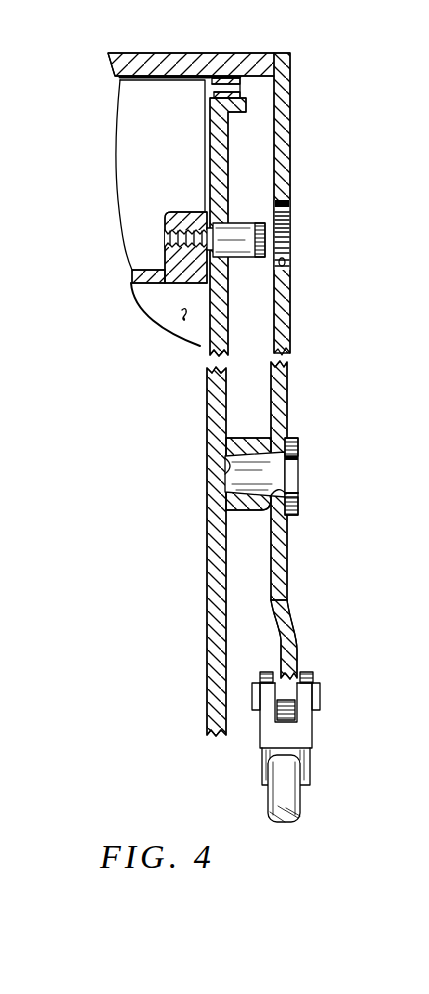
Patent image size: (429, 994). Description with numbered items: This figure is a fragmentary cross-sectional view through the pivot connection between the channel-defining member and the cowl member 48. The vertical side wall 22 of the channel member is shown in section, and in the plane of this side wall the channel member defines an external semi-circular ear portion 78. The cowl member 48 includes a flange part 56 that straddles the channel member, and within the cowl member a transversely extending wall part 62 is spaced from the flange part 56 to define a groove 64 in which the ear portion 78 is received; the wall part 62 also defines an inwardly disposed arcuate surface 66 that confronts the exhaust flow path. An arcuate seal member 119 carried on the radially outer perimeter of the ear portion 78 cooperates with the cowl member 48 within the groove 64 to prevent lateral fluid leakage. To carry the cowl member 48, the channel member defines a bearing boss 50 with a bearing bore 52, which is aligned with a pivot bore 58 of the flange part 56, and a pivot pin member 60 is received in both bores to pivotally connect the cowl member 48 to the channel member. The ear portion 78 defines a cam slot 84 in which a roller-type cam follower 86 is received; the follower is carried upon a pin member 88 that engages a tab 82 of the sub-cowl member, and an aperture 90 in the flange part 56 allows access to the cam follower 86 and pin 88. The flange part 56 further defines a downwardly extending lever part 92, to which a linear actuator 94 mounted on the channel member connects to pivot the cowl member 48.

The cowl member 48 is at (306, 111).
The groove 64 is at (276, 141).
The ear portion 78 is at (216, 110).
The arcuate seal member 119 is at (247, 87).
The pin member 88 is at (178, 212).
The tab 82 is at (161, 230).
The wall part 62 is at (148, 268).
The cam follower 86 is at (266, 233).
The aperture 90 is at (285, 263).
The cam slot 84 is at (207, 285).
The arcuate surface 66 is at (187, 320).
The flange part 56 is at (283, 347).
The bearing boss 50 is at (247, 438).
The bearing bore 52 is at (226, 468).
The pivot pin member 60 is at (298, 474).
The pivot bore 58 is at (292, 492).
The lever part 92 is at (288, 641).
The side wall 22 is at (210, 656).
The linear actuator 94 is at (297, 795).